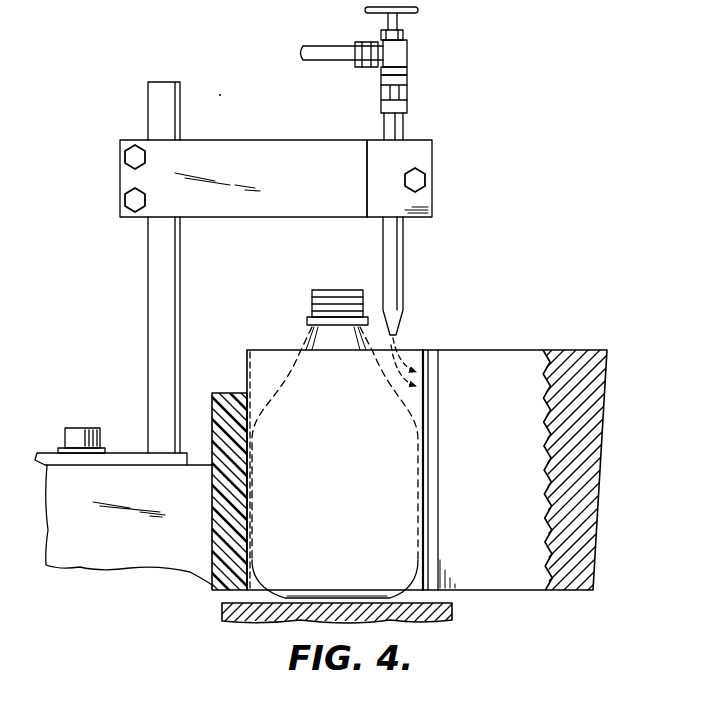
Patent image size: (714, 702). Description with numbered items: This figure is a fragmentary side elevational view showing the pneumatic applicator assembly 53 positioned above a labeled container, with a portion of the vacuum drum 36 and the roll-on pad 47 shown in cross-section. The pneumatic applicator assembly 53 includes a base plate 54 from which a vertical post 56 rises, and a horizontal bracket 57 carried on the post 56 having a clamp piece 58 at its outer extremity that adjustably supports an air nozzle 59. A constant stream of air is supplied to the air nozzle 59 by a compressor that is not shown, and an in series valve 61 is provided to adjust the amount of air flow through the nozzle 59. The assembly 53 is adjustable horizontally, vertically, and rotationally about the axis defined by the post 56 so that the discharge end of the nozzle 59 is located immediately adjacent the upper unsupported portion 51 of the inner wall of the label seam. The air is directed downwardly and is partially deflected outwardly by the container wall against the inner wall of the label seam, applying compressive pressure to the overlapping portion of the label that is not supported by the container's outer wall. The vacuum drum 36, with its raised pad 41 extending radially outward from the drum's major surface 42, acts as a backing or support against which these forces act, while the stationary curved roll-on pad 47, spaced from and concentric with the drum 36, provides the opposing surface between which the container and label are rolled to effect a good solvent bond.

The vacuum drum 36 is at (523, 346).
The raised pad 41 is at (432, 425).
The major surface 42 is at (503, 484).
The roll-on pad 47 is at (232, 393).
The upper unsupported portion 51 is at (422, 362).
The pneumatic applicator assembly 53 is at (213, 58).
The base plate 54 is at (128, 453).
The vertical post 56 is at (148, 322).
The horizontal bracket 57 is at (266, 150).
The clamp piece 58 is at (421, 153).
The air nozzle 59 is at (404, 277).
The in series valve 61 is at (408, 56).